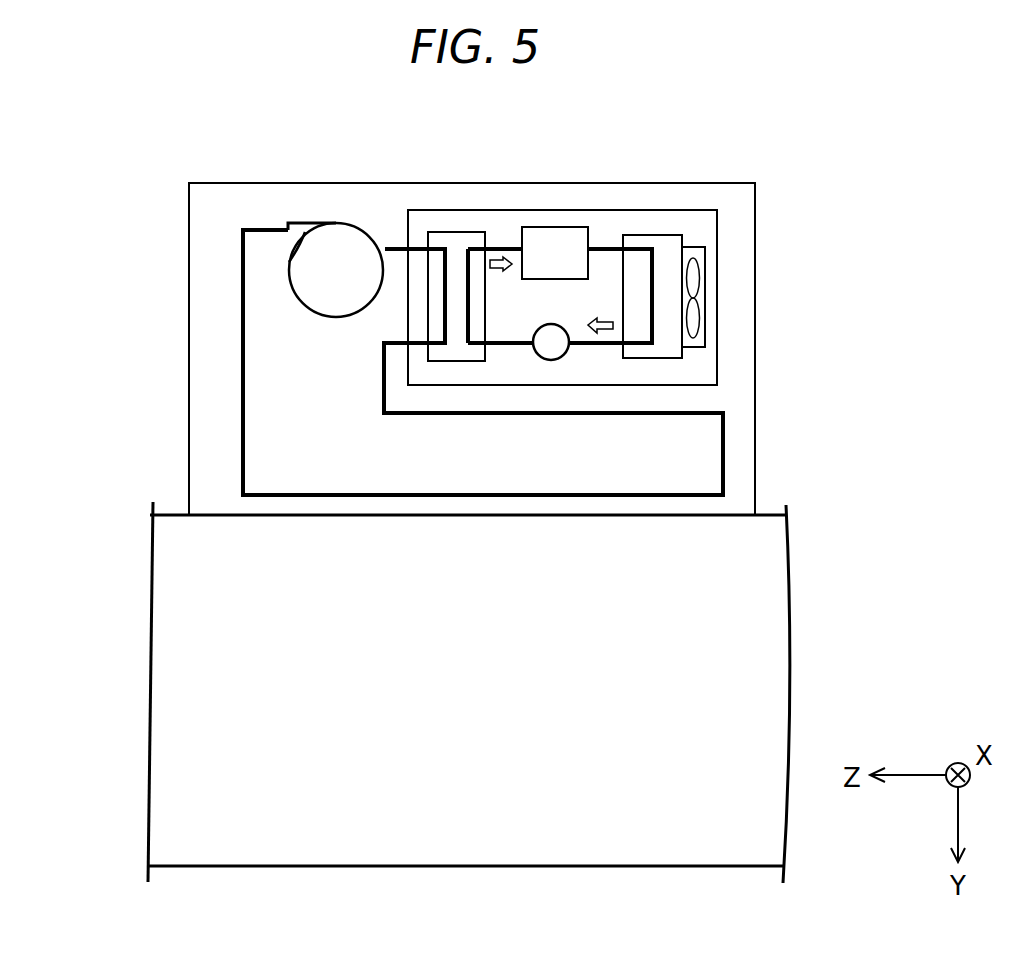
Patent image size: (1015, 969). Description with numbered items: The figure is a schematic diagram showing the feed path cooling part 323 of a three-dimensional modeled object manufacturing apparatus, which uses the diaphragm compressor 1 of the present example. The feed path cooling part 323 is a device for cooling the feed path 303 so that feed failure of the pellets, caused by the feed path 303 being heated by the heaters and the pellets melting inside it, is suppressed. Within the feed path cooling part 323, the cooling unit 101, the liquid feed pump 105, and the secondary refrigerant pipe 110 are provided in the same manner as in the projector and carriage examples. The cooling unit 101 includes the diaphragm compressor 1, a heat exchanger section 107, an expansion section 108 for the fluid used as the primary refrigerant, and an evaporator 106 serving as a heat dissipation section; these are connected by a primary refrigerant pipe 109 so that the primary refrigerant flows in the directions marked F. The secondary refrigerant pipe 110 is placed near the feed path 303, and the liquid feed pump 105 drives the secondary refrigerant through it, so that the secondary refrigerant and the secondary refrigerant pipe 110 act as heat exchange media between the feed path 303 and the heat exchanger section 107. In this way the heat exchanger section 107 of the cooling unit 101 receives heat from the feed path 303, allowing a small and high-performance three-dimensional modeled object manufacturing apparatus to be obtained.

The feed path cooling part 323 is at (802, 200).
The feed path 303 is at (203, 597).
The secondary refrigerant pipe 110 is at (268, 227).
The liquid feed pump 105 is at (332, 242).
The cooling unit 101 is at (507, 203).
The evaporator 106 is at (452, 242).
The primary refrigerant pipe 109 is at (608, 243).
The diaphragm compressor 1 is at (553, 238).
The heat exchanger section 107 is at (667, 248).
The expansion section 108 is at (553, 348).